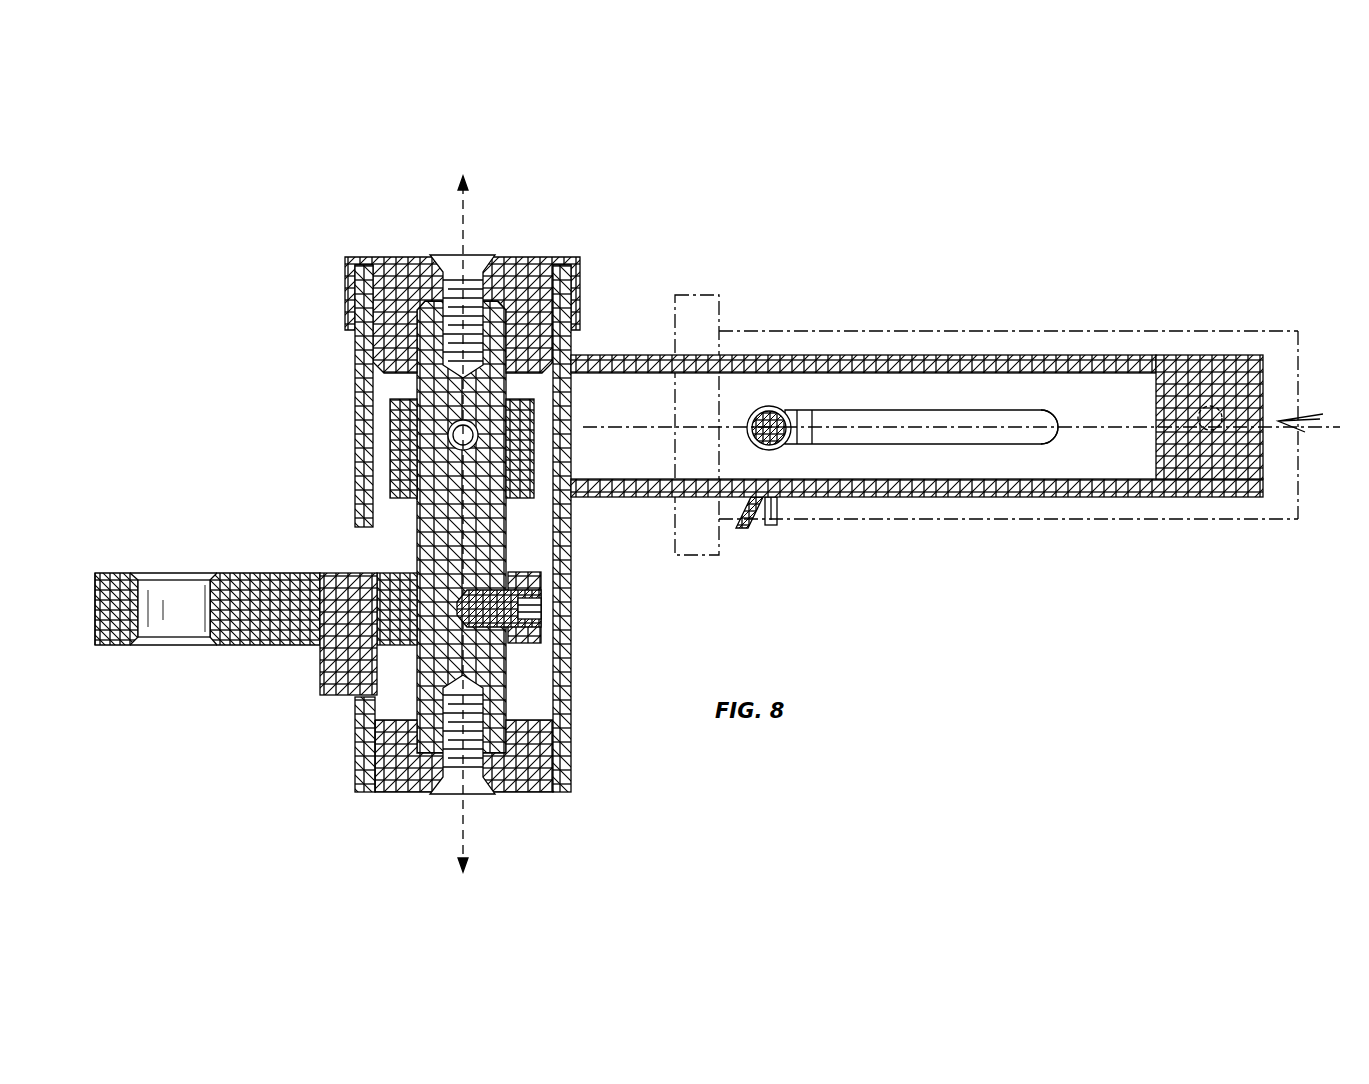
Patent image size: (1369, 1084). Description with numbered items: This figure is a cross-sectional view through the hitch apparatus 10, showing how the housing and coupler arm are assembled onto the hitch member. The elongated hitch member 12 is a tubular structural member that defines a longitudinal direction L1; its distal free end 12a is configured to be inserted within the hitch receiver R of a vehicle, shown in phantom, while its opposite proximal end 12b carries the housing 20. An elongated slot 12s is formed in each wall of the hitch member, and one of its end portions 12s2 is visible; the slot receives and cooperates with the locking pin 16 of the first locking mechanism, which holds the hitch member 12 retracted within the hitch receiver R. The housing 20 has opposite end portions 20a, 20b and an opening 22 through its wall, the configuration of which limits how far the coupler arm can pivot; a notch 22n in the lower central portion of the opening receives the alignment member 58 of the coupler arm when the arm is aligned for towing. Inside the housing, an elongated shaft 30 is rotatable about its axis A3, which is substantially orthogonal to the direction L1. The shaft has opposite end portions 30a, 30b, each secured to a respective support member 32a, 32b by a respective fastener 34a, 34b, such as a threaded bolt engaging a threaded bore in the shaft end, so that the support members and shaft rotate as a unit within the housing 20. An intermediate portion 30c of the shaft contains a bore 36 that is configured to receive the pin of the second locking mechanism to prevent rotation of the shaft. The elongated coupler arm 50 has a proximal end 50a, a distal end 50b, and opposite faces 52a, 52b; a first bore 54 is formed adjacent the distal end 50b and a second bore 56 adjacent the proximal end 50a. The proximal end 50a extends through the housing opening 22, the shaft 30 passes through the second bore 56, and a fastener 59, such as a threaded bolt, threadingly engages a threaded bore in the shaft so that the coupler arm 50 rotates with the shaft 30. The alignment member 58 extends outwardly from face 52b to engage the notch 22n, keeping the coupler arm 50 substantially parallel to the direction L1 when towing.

The hitch apparatus 10 is at (748, 270).
The elongated hitch member 12 is at (1105, 352).
The distal free end 12a is at (1237, 498).
The proximal end 12b is at (596, 355).
The elongated slot 12s is at (972, 443).
The slot end portion 12s2 is at (1050, 435).
The locking pin 16 is at (772, 432).
The housing 20 is at (350, 437).
The housing end portion 20a is at (352, 785).
The housing end portion 20b is at (350, 340).
The housing opening 22 is at (360, 535).
The notch 22n is at (357, 700).
The elongated shaft 30 is at (430, 555).
The shaft end portion 30a is at (440, 745).
The shaft end portion 30b is at (428, 318).
The intermediate portion of shaft 30c is at (450, 488).
The support member 32a is at (522, 790).
The support member 32b is at (520, 268).
The fastener 34a is at (445, 792).
The fastener 34b is at (447, 257).
The bore 36 is at (450, 442).
The coupler arm 50 is at (238, 645).
The coupler arm proximal end 50a is at (525, 572).
The coupler arm distal end 50b is at (112, 572).
The coupler arm face 52a is at (230, 572).
The coupler arm face 52b is at (110, 647).
The first bore 54 is at (142, 608).
The second bore 56 is at (432, 575).
The alignment member 58 is at (330, 663).
The fastener 59 is at (512, 608).
The shaft axis A3 is at (462, 233).
The hitch receiver R is at (975, 328).
The longitudinal direction L1 is at (1303, 432).